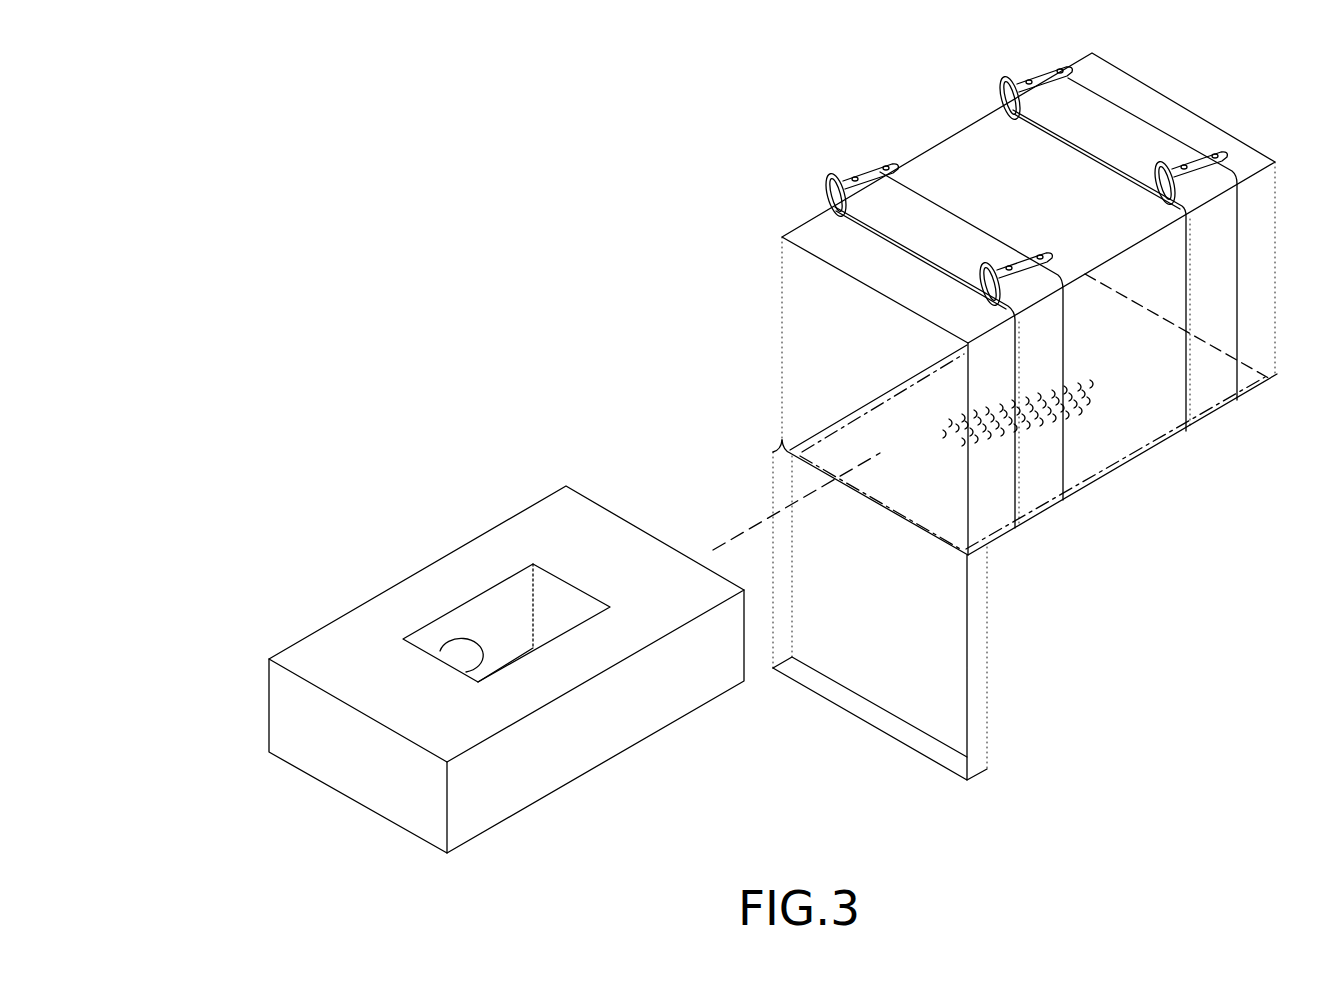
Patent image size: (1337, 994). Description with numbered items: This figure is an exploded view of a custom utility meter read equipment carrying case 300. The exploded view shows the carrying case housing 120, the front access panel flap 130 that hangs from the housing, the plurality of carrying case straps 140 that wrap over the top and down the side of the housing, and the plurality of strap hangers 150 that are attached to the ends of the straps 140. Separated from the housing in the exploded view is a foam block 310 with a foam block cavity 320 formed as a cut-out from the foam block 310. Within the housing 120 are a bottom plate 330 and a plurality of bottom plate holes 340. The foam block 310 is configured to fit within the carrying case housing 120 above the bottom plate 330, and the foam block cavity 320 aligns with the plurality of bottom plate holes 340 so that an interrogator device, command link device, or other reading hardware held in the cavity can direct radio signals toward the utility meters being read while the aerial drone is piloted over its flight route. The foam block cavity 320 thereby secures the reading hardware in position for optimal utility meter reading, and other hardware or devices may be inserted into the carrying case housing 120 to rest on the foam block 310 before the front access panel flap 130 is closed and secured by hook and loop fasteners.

The custom utility meter read equipment carrying case 300 is at (356, 72).
The carrying case housing 120 is at (1110, 82).
The front access panel flap 130 is at (975, 648).
The carrying case straps 140 is at (1027, 125).
The strap hangers 150 is at (838, 172).
The foam block 310 is at (468, 550).
The foam block cavity 320 is at (441, 648).
The bottom plate 330 is at (858, 405).
The bottom plate holes 340 is at (1094, 398).